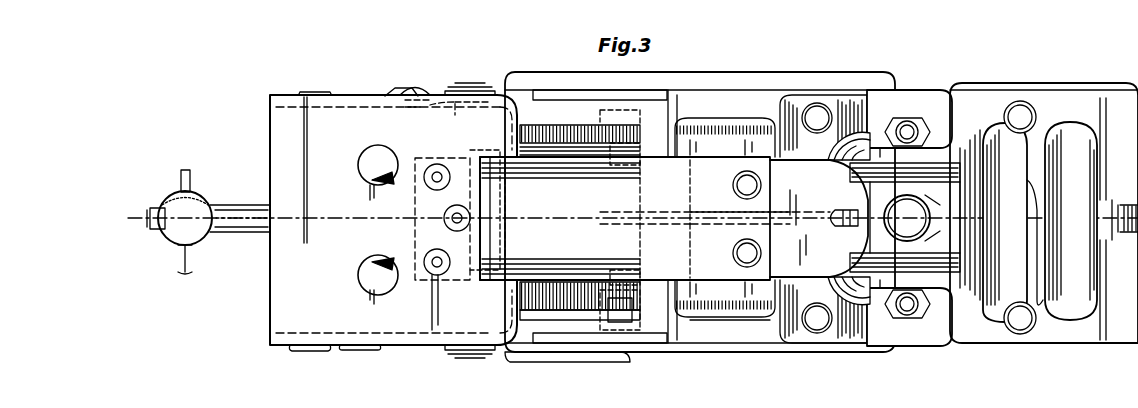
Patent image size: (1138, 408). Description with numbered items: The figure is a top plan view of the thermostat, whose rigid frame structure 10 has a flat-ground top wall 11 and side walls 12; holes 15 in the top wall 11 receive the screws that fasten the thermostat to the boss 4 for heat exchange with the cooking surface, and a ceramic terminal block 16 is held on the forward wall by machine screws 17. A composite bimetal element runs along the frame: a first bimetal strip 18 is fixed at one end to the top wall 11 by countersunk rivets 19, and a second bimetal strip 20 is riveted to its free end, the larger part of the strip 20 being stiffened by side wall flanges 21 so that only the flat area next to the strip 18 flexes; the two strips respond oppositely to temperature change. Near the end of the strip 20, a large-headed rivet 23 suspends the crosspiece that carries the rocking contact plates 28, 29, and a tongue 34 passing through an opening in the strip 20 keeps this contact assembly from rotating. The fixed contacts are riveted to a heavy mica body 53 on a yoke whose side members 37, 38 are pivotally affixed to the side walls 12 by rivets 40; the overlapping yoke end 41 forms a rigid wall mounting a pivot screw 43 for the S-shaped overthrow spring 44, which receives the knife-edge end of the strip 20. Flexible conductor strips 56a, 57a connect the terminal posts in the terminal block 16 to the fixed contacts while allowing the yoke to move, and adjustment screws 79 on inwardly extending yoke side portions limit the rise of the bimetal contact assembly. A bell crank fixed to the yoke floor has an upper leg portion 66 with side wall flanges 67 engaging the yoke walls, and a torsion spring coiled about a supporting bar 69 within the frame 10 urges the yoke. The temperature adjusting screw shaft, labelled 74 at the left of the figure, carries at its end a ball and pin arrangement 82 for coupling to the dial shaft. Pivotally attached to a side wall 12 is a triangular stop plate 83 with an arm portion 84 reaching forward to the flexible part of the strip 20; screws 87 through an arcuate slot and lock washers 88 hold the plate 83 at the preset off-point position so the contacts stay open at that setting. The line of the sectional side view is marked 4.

The boss 4 is at (130, 203).
The frame structure 10 is at (266, 310).
The top wall 11 is at (324, 273).
The side walls 12 is at (320, 95).
The holes 15 is at (385, 253).
The ceramic terminal block 16 is at (645, 352).
The machine screws 17 is at (540, 125).
The first bimetal strip 18 is at (648, 254).
The countersunk rivets 19 is at (432, 178).
The second bimetal strip 20 is at (816, 196).
The side wall flanges 21 is at (930, 250).
The large-headed rivet 23 is at (885, 202).
The contact plate 28 is at (850, 300).
The contact plate 29 is at (975, 140).
The tongue 34 is at (845, 228).
The yoke side member 37 is at (775, 345).
The yoke side member 38 is at (765, 90).
The rivets 40 is at (478, 80).
The yoke side member end 41 is at (1132, 122).
The pivot screw 43 is at (1125, 205).
The S-shaped overthrow spring 44 is at (1072, 315).
The mica body 53 is at (992, 330).
The flexible conductor strip 56a is at (725, 296).
The flexible conductor strip 57a is at (760, 125).
The upper leg portion 66 is at (625, 370).
The side wall flanges 67 is at (648, 105).
The supporting bar 69 is at (305, 350).
The shaft 74 is at (240, 205).
The adjustment screws 79 is at (920, 125).
The ball and pin arrangement 82 is at (208, 240).
The triangular stop plate 83 is at (380, 110).
The arm portion 84 is at (710, 125).
The screws 87 is at (422, 86).
The lock washers 88 is at (420, 114).